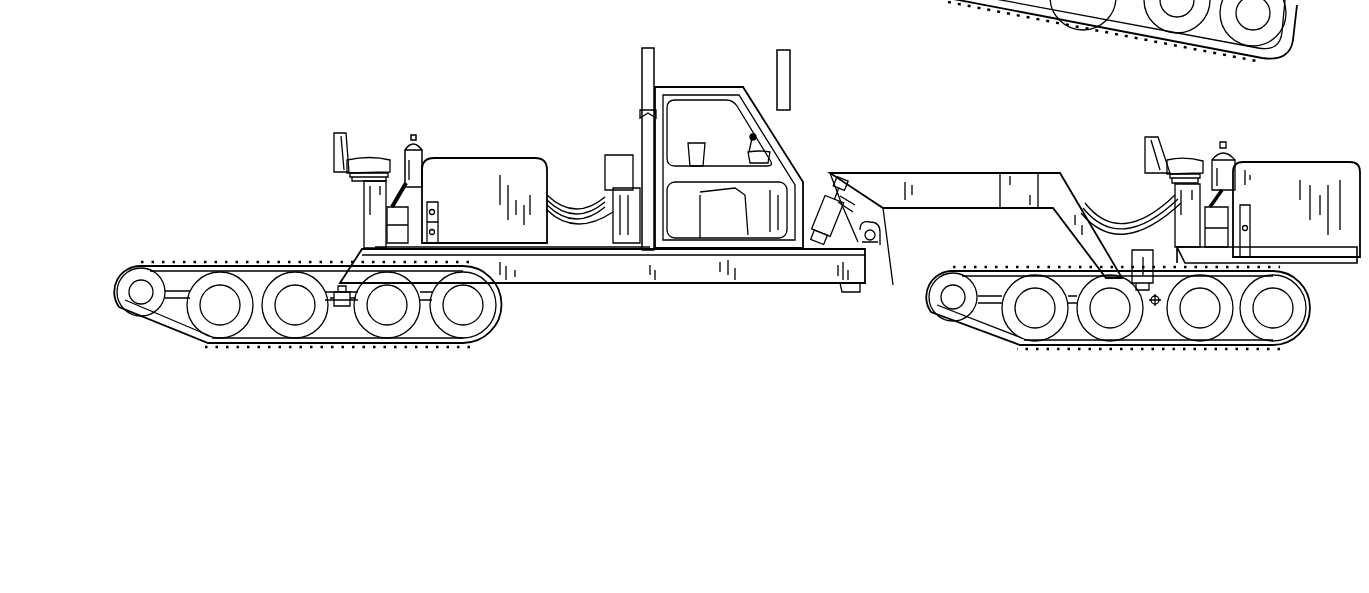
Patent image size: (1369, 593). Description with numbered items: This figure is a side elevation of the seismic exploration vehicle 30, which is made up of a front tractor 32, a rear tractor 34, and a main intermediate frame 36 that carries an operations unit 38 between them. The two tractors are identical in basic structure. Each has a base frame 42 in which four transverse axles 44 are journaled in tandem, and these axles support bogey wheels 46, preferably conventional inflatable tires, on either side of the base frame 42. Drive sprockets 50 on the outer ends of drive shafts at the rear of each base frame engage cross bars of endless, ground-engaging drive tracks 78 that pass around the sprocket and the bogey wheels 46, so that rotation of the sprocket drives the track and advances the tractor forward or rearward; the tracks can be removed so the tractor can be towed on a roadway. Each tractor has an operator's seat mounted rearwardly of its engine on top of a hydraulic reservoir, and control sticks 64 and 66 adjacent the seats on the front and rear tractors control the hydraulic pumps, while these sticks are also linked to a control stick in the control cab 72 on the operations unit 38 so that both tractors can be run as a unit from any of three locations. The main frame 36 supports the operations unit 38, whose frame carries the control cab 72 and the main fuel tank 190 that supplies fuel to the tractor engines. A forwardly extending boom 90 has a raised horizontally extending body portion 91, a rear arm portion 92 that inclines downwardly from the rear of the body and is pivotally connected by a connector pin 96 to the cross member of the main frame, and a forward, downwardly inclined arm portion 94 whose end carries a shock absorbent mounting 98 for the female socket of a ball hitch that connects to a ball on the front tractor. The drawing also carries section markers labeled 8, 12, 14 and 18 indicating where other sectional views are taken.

In FIG. 2, the seismic exploration vehicle 30 is at (474, 92).
In FIG. 2, the front tractor 32 is at (1319, 142).
In FIG. 2, the rear tractor 34 is at (335, 123).
In FIG. 2, the main intermediate frame 36 is at (617, 285).
In FIG. 2, the operations unit 38 is at (722, 232).
In FIG. 1, the base frame 42 is at (1122, 18).
In FIG. 1, the transverse axles 44 is at (945, 4).
In FIG. 1, the bogey wheels 46 is at (1212, 22).
In FIG. 1, the drive sprockets 50 is at (874, 8).
In FIG. 2, the control stick 64 is at (1234, 140).
In FIG. 2, the control stick 66 is at (417, 140).
In FIG. 2, the control cab 72 is at (726, 95).
In FIG. 1, the endless drive tracks 78 is at (1305, 5).
In FIG. 2, the forwardly extending boom 90 is at (976, 224).
In FIG. 2, the horizontally extending body portion 91 is at (970, 190).
In FIG. 2, the rear arm portion 92 is at (866, 185).
In FIG. 2, the forward arm portion 94 is at (1068, 216).
In FIG. 2, the connector pin 96 is at (882, 242).
In FIG. 2, the shock absorbent mounting 98 is at (1110, 263).
In FIG. 2, the main fuel tank 190 is at (612, 162).
In FIG. 2, the section line 8- 8 is at (343, 373).
In FIG. 2, the section line 12- 12 is at (1142, 252).
In FIG. 2, the section line 14- 14 is at (1208, 142).
In FIG. 2, the section line 18- 18 is at (810, 27).